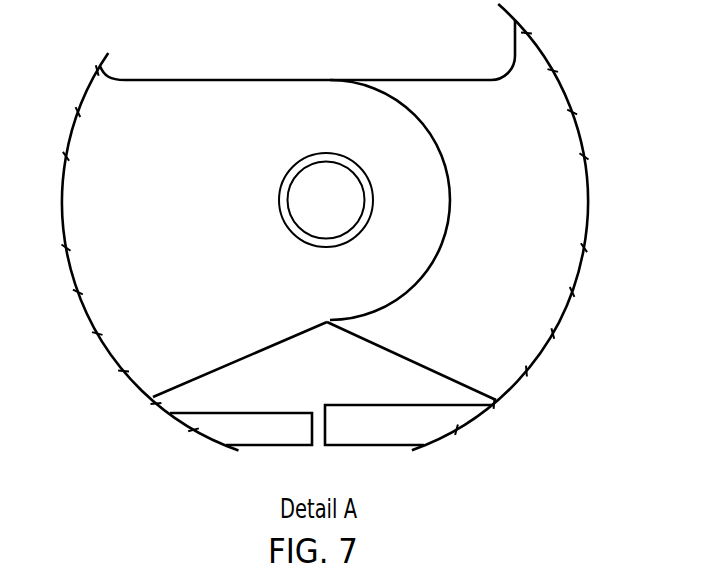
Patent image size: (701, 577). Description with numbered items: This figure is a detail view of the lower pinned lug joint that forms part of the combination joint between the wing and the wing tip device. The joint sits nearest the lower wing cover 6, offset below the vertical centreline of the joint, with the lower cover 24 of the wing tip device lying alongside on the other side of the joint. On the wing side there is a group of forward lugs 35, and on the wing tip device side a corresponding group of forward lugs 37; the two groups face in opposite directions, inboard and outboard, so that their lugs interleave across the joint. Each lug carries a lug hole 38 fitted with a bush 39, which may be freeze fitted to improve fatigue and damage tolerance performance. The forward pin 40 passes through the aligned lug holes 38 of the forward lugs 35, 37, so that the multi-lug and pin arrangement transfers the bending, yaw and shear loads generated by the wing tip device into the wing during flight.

The lower wing cover 6 is at (237, 430).
The lower cover 24 is at (385, 423).
The group of forward lugs 35 is at (108, 297).
The group of forward lugs 37 is at (550, 287).
The lug hole 38 is at (367, 227).
The bush 39 is at (370, 196).
The forward pin 40 is at (343, 188).